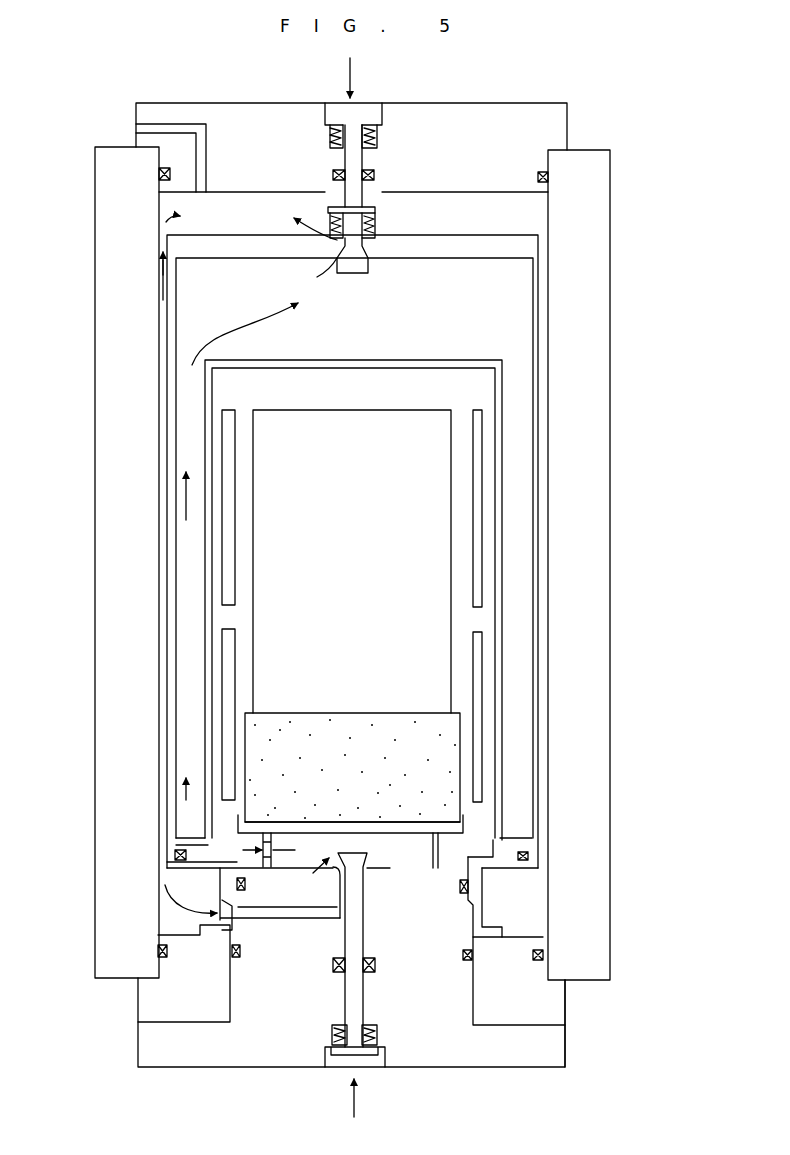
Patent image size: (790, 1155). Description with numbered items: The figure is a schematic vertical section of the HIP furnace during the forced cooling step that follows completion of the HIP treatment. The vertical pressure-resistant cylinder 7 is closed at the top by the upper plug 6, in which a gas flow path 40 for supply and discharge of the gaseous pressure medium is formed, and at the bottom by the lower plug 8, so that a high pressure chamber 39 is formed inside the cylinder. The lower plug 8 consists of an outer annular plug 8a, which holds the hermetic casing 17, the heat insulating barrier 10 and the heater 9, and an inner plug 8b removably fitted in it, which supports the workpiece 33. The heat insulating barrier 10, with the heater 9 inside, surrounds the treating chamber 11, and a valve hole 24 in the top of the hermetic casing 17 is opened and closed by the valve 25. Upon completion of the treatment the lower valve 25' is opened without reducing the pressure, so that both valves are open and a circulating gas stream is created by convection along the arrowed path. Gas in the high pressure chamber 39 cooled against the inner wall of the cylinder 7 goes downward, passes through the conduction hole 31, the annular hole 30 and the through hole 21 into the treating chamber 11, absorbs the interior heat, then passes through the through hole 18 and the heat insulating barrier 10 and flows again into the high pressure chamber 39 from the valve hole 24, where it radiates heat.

The upper plug 6 is at (567, 137).
The pressure-resistant cylinder 7 is at (612, 203).
The lower plug 8 is at (402, 1043).
The outer annular plug 8a is at (565, 1008).
The inner plug 8b is at (565, 1038).
The heater 9 is at (482, 543).
The heat insulating barrier 10 is at (192, 460).
The treating chamber 11 is at (460, 392).
The hermetic casing 17 is at (538, 720).
The through hole 18 is at (228, 835).
The through hole 21 is at (258, 858).
The valve hole 24 is at (370, 242).
The valve 25 is at (308, 301).
The valve 25' is at (401, 985).
The annular hole 30 is at (313, 918).
The conduction hole 31 is at (265, 918).
The workpiece 33 is at (451, 613).
The high pressure chamber 39 is at (162, 714).
The gas flow path 40 is at (136, 133).